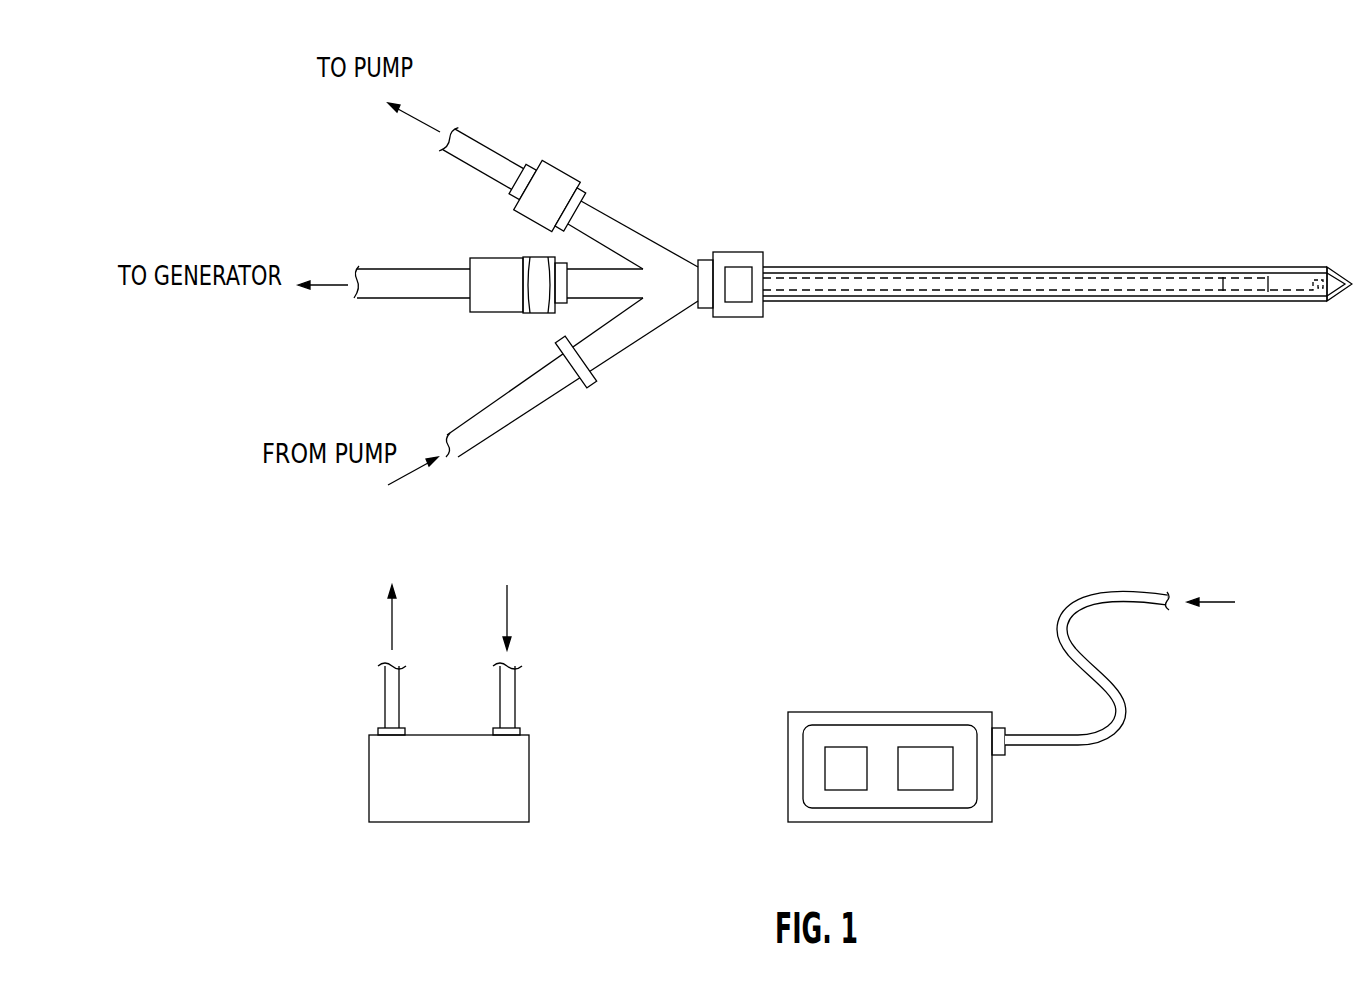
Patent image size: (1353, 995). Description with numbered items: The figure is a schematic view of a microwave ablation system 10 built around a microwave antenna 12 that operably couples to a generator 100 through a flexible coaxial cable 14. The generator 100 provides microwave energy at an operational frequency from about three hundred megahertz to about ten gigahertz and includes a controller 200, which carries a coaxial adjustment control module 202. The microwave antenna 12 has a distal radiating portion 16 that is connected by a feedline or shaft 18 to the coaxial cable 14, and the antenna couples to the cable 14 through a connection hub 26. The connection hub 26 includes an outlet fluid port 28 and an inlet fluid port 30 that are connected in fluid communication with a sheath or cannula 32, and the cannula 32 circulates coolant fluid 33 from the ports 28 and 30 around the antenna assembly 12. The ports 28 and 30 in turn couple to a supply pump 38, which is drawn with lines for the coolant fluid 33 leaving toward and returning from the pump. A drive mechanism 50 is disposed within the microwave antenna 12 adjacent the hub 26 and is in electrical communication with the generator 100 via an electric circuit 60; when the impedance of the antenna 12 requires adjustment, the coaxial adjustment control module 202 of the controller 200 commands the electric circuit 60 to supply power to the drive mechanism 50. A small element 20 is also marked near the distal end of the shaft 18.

The microwave ablation system 10 is at (1218, 136).
The microwave antenna 12 is at (818, 192).
The flexible coaxial cable 14 is at (1103, 278).
The distal radiating portion 16 is at (1287, 267).
The feedline or shaft 18 is at (782, 266).
The temperature sensor 20 is at (1295, 287).
The connection hub 26 is at (666, 357).
The outlet fluid port 28 is at (552, 182).
The inlet fluid port 30 is at (587, 382).
The sheath or cannula 32 is at (867, 270).
The coolant fluid 33 is at (508, 618).
The supply pump 38 is at (463, 807).
The drive mechanism 50 is at (740, 266).
The electric circuit 60 is at (858, 781).
The generator 100 is at (813, 712).
The controller 200 is at (827, 808).
The coaxial adjustment control module 202 is at (947, 781).